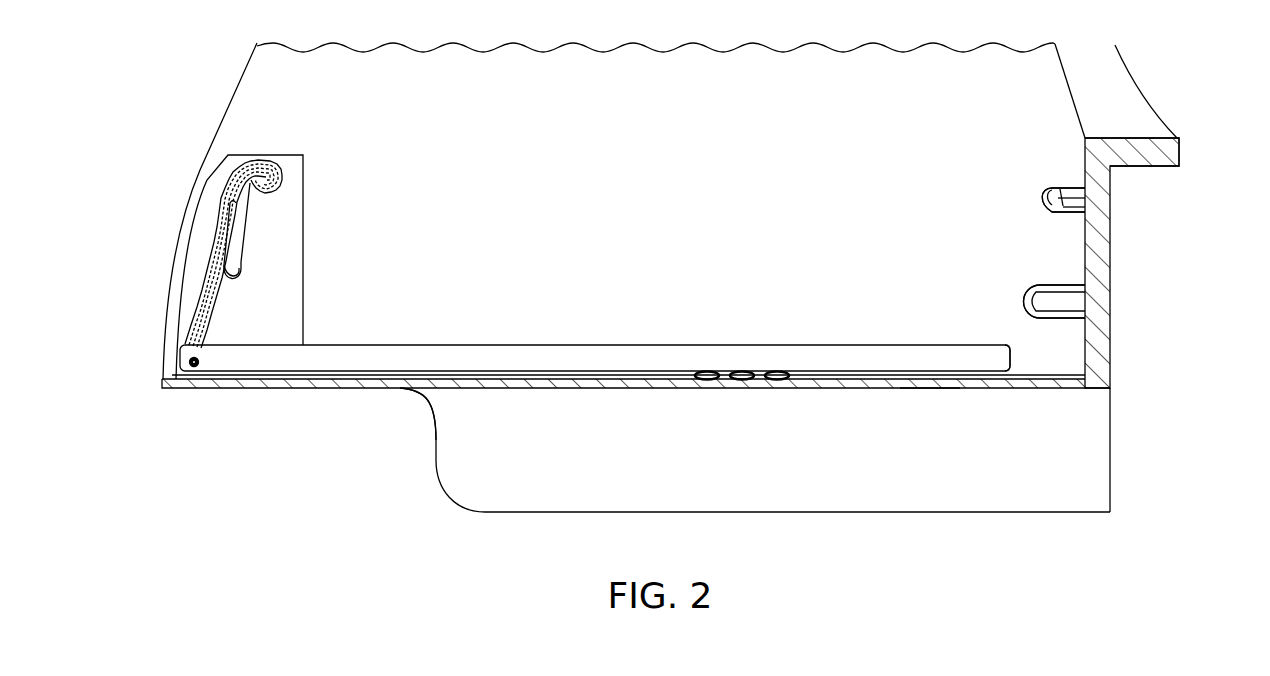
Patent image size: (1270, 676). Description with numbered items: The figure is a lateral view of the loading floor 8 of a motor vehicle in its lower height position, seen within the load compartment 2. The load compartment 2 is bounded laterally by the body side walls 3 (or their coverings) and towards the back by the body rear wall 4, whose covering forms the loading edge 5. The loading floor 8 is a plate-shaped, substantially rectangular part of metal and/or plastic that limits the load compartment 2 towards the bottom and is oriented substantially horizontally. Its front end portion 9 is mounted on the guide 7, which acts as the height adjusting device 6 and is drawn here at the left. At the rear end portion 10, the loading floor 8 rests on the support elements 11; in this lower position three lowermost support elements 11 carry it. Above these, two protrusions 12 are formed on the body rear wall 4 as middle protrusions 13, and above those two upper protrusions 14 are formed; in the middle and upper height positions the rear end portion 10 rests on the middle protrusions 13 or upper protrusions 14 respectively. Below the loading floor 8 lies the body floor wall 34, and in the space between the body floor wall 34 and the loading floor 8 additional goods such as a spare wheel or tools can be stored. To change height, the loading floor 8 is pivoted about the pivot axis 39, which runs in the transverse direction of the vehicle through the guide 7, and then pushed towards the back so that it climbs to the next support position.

The load compartment 2 is at (993, 76).
The body side wall 3 is at (656, 219).
The body rear wall 4 is at (1103, 263).
The loading edge 5 is at (1137, 137).
The height adjusting device 6 is at (209, 190).
The guide 7 is at (237, 231).
The loading floor 8 is at (352, 357).
The front end portion 9 is at (252, 356).
The rear end portion 10 is at (990, 358).
The support elements 11 is at (763, 384).
The protrusions 12 is at (1055, 253).
The middle protrusions 13 is at (1070, 302).
The upper protrusions 14 is at (1082, 203).
The body floor wall 34 is at (455, 440).
The pivot axis 39 is at (194, 368).